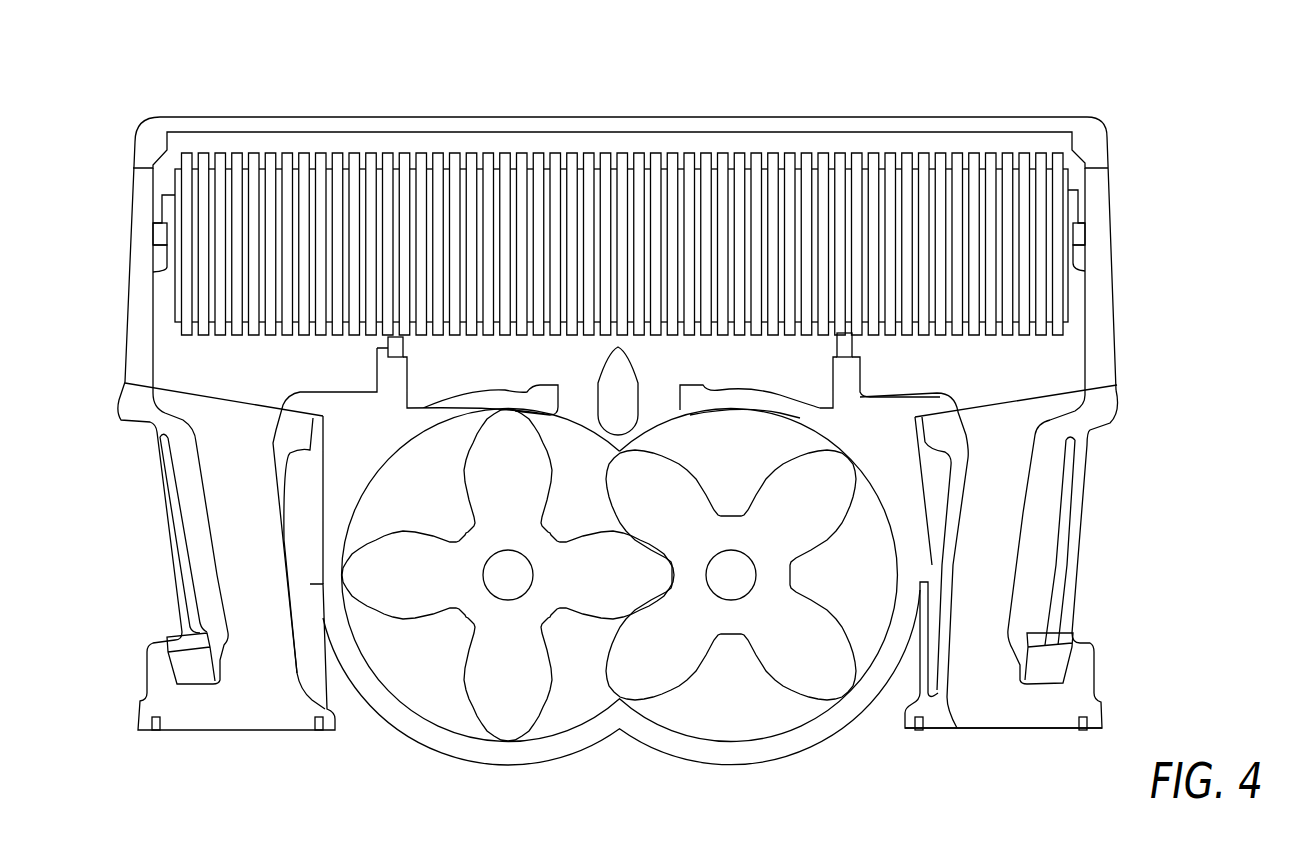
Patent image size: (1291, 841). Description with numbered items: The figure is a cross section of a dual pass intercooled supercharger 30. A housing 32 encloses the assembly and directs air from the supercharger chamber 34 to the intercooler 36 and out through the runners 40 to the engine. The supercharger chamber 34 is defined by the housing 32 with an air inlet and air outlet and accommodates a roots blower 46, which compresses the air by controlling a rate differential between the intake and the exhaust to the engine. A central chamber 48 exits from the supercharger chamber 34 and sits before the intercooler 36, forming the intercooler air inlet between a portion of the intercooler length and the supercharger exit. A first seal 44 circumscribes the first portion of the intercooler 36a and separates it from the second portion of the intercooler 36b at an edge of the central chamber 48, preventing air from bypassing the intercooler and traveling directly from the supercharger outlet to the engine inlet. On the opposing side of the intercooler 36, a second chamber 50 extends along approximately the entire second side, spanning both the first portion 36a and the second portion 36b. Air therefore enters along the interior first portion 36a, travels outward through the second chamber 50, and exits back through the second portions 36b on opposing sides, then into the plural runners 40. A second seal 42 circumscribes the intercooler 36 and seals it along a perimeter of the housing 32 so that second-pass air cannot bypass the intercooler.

The dual pass intercooled supercharger 30 is at (817, 58).
The housing 32 is at (1108, 415).
The supercharger chamber 34 is at (599, 610).
The intercooler 36 is at (621, 196).
The first portion of the intercooler 36a is at (497, 222).
The second portion of the intercooler 36b is at (222, 212).
The runners 40 is at (1000, 703).
The second seal 42 is at (1090, 235).
The first seal 44 is at (858, 345).
The roots blower 46 is at (473, 673).
The central chamber 48 is at (657, 378).
The second chamber 50 is at (320, 140).